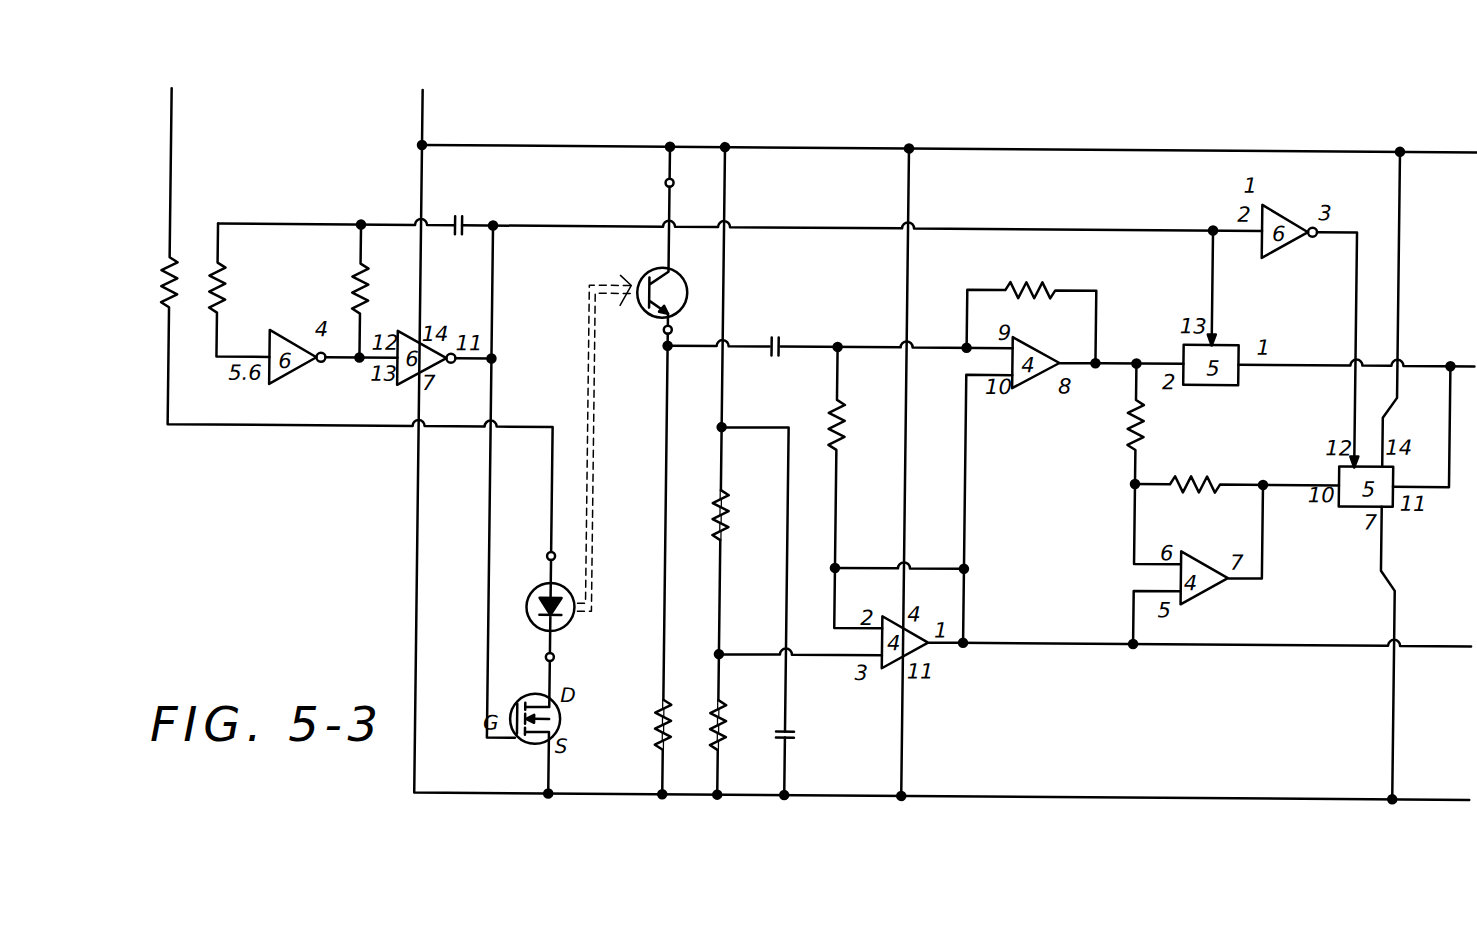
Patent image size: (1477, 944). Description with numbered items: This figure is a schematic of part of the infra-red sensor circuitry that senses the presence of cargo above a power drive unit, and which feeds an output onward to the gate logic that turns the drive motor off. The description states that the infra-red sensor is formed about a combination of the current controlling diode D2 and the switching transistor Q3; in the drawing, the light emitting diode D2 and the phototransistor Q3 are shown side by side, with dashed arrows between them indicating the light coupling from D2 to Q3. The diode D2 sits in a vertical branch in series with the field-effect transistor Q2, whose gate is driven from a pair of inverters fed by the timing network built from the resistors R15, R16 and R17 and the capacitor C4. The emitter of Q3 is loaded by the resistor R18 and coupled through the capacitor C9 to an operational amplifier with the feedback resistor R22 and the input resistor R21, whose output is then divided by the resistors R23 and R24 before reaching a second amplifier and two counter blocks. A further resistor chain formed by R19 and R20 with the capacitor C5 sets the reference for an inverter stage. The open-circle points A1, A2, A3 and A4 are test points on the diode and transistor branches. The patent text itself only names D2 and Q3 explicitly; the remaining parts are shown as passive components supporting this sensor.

The resistor R15 is at (247, 291).
The resistor R16 is at (336, 290).
The resistor R17 is at (340, 320).
The resistor R18 is at (637, 724).
The resistor R19 is at (748, 515).
The resistor R20 is at (743, 725).
The resistor R21 is at (865, 488).
The resistor R22 is at (1031, 310).
The resistor R23 is at (1163, 423).
The resistor R24 is at (1237, 470).
The capacitor C4 is at (463, 209).
The capacitor C5 is at (807, 734).
The capacitor C9 is at (780, 333).
The MOSFET transistor Q2 is at (523, 727).
The switching transistor Q3 is at (676, 253).
The current controlling diode D2 is at (535, 616).
The test point A1 is at (536, 563).
The test point A2 is at (566, 652).
The test point A3 is at (650, 329).
The test point A4 is at (657, 174).